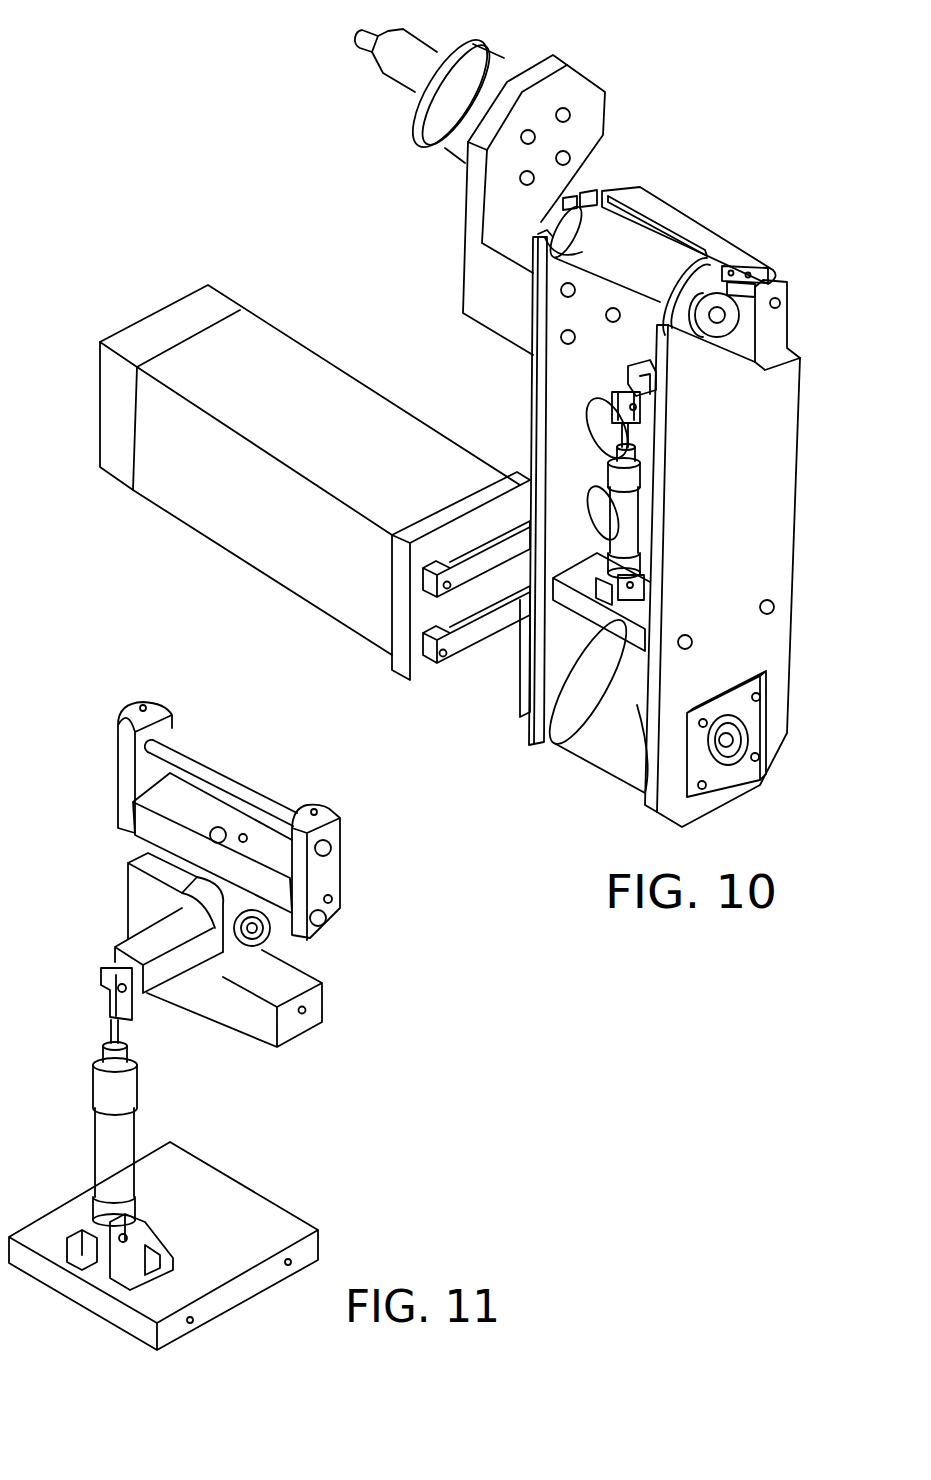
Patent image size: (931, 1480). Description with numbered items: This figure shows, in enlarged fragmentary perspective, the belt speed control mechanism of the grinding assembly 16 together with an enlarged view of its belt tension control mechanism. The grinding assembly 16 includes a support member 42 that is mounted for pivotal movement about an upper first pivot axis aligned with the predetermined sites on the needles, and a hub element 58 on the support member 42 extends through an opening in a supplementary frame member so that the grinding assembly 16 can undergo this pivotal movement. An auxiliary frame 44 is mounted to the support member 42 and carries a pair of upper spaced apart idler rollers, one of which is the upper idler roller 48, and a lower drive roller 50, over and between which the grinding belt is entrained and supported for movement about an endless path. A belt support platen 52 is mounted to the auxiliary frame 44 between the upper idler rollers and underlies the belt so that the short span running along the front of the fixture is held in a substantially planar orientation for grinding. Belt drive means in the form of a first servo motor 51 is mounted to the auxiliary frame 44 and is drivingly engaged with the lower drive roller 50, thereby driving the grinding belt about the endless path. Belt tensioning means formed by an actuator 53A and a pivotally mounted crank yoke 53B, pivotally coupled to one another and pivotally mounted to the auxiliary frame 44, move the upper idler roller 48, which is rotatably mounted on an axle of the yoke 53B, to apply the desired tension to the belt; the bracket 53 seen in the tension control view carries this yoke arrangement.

In FIG. 10, the grinding assembly 16 is at (800, 472).
In FIG. 10, the support member 42 is at (590, 127).
In FIG. 10, the auxiliary frame 44 is at (780, 569).
In FIG. 10, the upper idler roller 48 is at (648, 252).
In FIG. 10, the lower drive roller 50 is at (610, 752).
In FIG. 10, the first servo motor 51 is at (212, 523).
In FIG. 10, the belt support platen 52 is at (723, 250).
In FIG. 11, the bracket 53 is at (228, 787).
In FIG. 10, the actuator 53A is at (630, 520).
In FIG. 11, the actuator 53A is at (122, 1128).
In FIG. 10, the crank yoke 53B is at (633, 362).
In FIG. 11, the crank yoke 53B is at (223, 946).
In FIG. 10, the hub element 58 is at (498, 70).